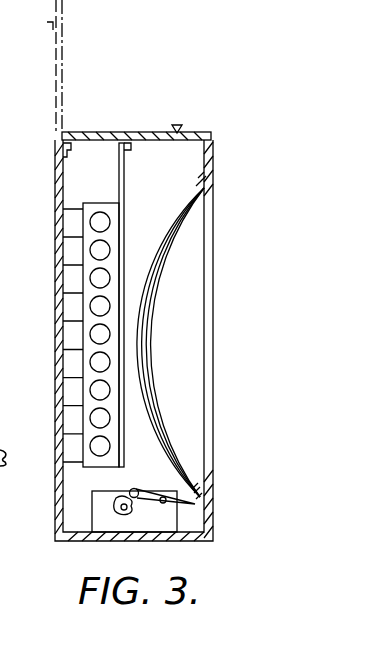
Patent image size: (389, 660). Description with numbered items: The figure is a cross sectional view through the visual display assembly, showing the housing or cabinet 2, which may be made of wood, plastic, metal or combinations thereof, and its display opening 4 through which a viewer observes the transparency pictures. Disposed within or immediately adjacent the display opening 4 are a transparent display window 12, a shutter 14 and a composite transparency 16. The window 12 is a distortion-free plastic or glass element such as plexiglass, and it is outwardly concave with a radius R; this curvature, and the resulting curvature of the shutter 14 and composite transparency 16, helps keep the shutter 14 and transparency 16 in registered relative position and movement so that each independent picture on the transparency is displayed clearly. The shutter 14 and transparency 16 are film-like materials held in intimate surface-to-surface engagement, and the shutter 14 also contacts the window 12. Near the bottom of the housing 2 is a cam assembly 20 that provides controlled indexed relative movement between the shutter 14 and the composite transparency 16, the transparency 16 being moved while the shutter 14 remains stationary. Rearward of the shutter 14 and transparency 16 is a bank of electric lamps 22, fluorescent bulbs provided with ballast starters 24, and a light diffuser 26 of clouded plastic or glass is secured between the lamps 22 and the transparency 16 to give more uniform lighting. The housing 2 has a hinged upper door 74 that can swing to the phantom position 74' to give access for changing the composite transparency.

The housing 2 is at (55, 187).
The display opening 4 is at (213, 201).
The transparent display window 12 is at (156, 283).
The shutter 14 is at (160, 250).
The composite transparency 16 is at (157, 243).
The cam assembly 20 is at (105, 509).
The electric lamps 22 is at (91, 418).
The ballast starters 24 is at (70, 312).
The light diffuser 26 is at (127, 213).
The hinged upper door 74 is at (136, 115).
The phantom position of upper door 74' is at (81, 65).
The radius R is at (157, 334).